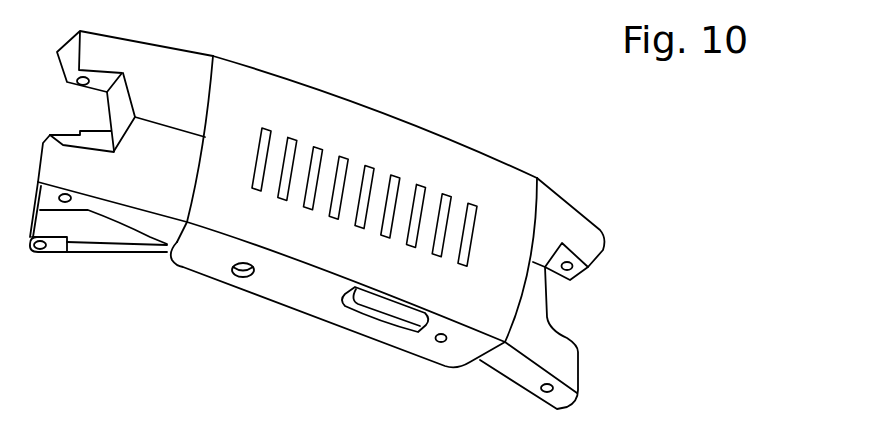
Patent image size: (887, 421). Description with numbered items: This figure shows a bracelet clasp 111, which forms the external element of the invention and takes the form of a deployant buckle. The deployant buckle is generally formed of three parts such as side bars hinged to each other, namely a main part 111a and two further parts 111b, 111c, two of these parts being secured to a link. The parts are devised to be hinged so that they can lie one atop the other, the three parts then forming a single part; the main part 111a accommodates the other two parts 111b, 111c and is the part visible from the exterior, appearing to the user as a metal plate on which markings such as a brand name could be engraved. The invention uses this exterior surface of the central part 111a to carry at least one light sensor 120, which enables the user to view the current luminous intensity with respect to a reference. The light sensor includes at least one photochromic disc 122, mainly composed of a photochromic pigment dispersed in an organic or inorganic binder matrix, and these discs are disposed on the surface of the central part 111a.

The clasp 111 is at (442, 127).
The main part 111a is at (277, 88).
The part of deployant buckle 111b is at (588, 232).
The part of deployant buckle 111c is at (103, 247).
The light sensor 120 is at (317, 230).
The photochromic disc 122 is at (470, 206).